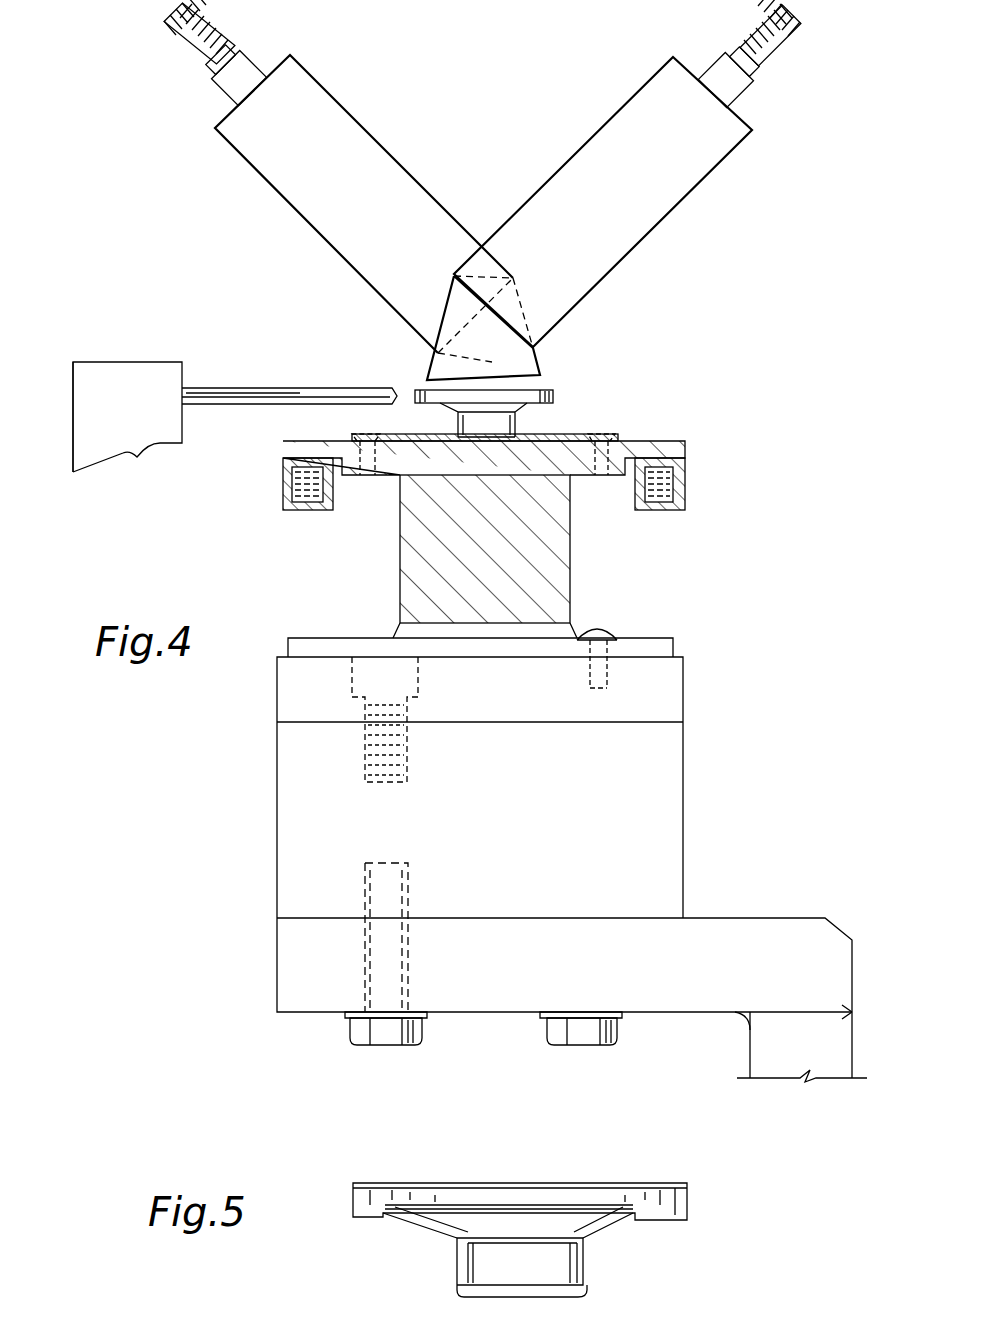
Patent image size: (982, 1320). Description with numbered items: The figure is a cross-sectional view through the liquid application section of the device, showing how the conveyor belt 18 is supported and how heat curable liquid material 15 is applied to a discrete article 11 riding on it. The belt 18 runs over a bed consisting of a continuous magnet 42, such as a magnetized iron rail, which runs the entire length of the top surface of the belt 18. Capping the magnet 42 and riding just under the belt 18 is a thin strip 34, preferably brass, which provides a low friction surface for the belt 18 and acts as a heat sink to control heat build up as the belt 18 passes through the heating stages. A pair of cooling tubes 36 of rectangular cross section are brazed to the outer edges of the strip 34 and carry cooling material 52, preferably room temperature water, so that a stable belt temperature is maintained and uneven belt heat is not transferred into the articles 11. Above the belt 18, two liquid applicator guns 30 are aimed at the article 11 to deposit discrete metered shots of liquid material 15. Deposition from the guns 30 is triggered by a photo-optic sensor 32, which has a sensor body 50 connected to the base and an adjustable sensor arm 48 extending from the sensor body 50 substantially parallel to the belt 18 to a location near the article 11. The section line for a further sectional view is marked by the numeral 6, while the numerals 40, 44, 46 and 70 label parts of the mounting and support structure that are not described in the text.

In FIG. 4, the liquid applicator gun 30 is at (410, 187).
In FIG. 4, the section line 6- 6 is at (75, 330).
In FIG. 4, the photo-optic sensor 32 is at (62, 362).
In FIG. 4, the sensor body 50 is at (176, 376).
In FIG. 4, the adjustable sensor arm 48 is at (290, 391).
In FIG. 4, the heat curable liquid material 15 is at (428, 382).
In FIG. 5, the heat curable liquid material 15 is at (658, 1198).
In FIG. 4, the discrete article 11 is at (553, 394).
In FIG. 5, the discrete article 11 is at (586, 1258).
In FIG. 4, the conveyor belt 18 is at (596, 440).
In FIG. 4, the strip 34 is at (686, 442).
In FIG. 4, the screw 40 is at (368, 470).
In FIG. 4, the cooling material 52 is at (292, 484).
In FIG. 4, the cooling tube 36 is at (283, 499).
In FIG. 4, the magnet 42 is at (476, 558).
In FIG. 4, the base plate 44 is at (668, 680).
In FIG. 4, the base block 46 is at (672, 772).
In FIG. 4, the support arm 70 is at (730, 927).